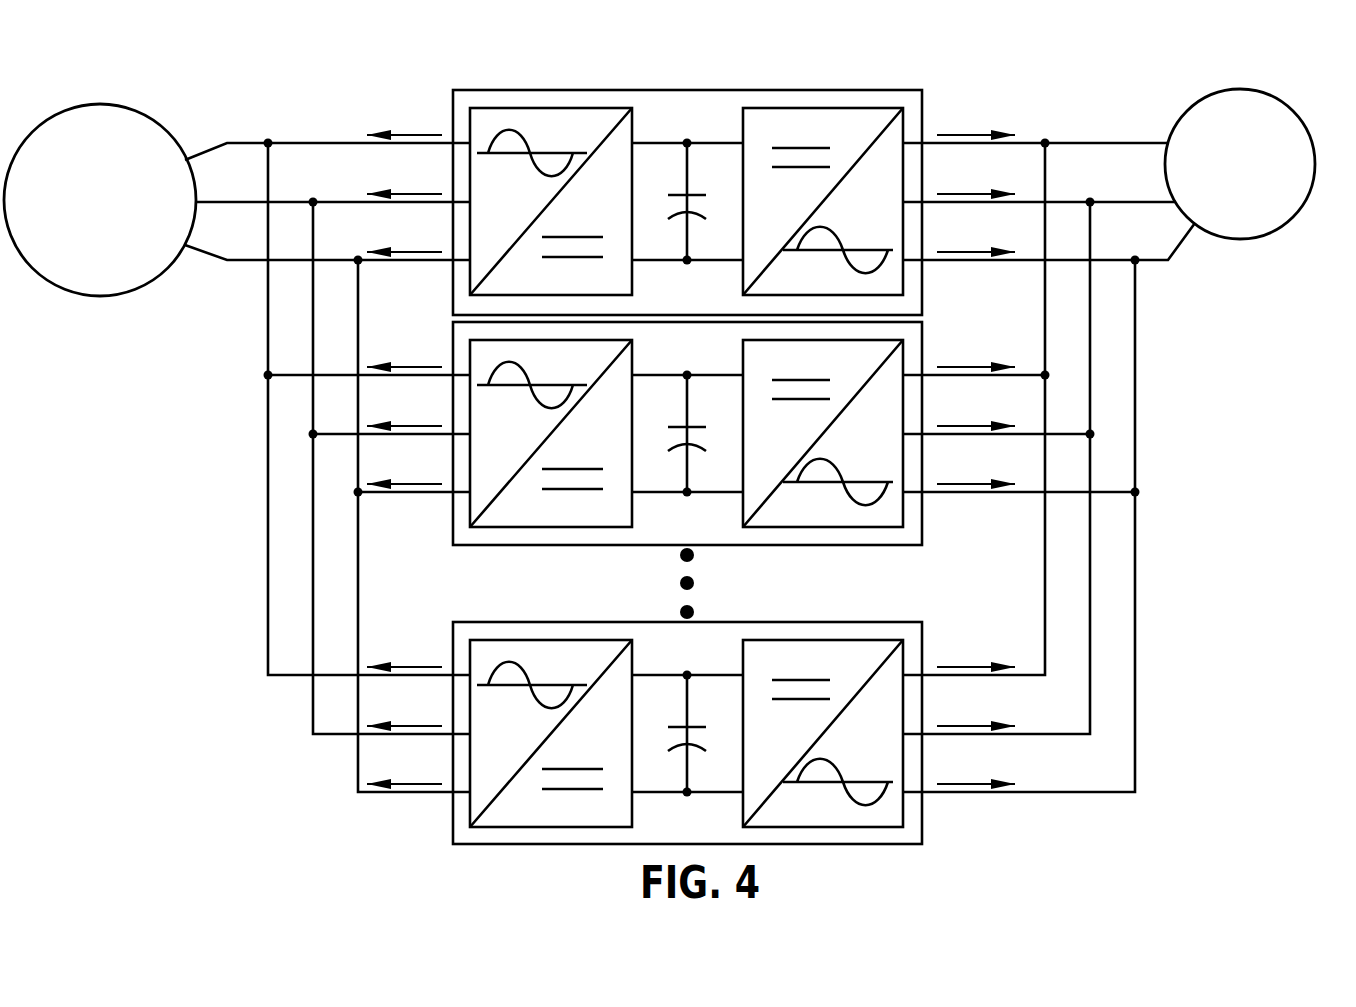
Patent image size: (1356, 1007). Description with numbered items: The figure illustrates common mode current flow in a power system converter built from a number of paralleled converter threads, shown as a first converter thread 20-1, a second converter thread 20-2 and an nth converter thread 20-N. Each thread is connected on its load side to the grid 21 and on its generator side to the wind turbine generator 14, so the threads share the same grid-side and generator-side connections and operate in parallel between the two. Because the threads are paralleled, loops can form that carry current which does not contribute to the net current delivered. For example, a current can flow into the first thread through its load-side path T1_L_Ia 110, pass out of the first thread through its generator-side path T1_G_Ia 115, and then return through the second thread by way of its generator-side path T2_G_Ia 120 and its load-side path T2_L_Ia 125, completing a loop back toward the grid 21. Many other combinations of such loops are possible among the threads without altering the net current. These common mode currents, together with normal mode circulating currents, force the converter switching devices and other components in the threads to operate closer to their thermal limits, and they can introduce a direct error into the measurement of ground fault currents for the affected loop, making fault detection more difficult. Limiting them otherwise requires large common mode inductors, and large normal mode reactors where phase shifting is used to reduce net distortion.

The wind turbine generator 14 is at (1277, 230).
The grid 21 is at (155, 280).
The first converter thread 20-1 is at (706, 170).
The second converter thread 20-2 is at (781, 413).
The nth converter thread 20-N is at (922, 818).
The thread T1_L_Ia 110 is at (412, 105).
The thread T1_G_Ia 115 is at (988, 108).
The thread T2_G_Ia 120 is at (990, 342).
The thread T2_L_Ia 125 is at (418, 340).